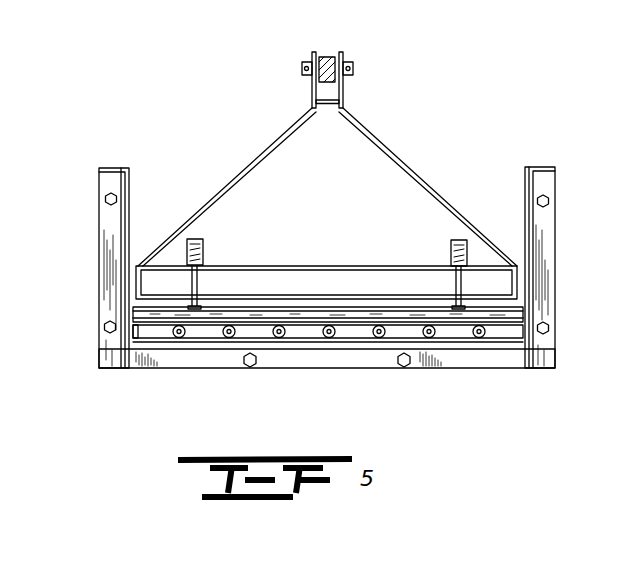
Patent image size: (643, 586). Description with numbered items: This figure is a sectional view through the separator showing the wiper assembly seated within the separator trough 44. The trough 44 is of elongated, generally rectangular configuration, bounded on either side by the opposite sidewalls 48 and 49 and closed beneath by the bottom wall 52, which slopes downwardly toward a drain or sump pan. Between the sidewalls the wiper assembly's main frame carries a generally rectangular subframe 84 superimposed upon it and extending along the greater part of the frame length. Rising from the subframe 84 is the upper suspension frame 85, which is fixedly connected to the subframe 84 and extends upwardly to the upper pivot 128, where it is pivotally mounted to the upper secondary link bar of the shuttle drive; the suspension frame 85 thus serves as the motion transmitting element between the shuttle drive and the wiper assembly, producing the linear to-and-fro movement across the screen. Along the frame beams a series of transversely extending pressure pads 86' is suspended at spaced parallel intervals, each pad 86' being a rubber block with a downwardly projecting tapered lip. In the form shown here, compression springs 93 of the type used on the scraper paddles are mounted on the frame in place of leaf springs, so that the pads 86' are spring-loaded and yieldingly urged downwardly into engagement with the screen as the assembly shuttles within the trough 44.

The upper pivot 128 is at (326, 55).
The upper suspension frame 85 is at (268, 146).
The subframe 84 is at (312, 266).
The compression springs 93 is at (205, 244).
The pressure pads 86' is at (380, 307).
The separator trough 44 is at (562, 273).
The sidewall 48 is at (120, 226).
The sidewall 49 is at (531, 217).
The bottom wall 52 is at (310, 368).